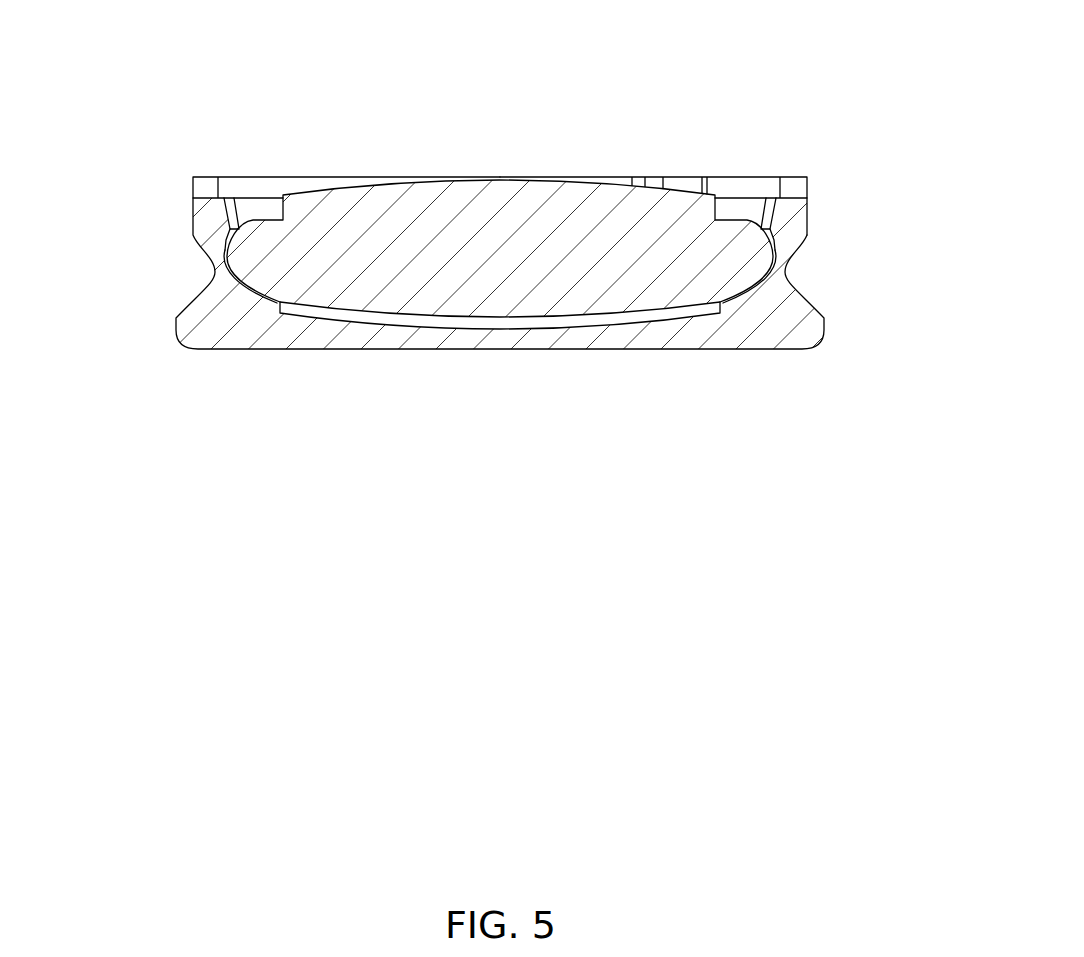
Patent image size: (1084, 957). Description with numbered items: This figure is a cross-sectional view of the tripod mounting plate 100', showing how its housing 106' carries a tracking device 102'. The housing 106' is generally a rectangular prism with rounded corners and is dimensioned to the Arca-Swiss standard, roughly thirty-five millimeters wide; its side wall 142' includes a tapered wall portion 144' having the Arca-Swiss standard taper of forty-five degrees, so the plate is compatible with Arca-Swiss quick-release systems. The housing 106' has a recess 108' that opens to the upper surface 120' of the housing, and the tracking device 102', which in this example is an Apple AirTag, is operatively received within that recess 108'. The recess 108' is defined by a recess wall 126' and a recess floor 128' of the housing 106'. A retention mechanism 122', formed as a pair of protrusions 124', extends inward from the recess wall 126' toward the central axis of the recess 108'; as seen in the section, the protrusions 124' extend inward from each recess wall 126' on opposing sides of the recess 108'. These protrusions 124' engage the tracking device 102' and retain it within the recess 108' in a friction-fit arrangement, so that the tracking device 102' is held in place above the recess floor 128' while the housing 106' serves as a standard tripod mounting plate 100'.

The tripod mounting plate 100' is at (507, 214).
The tracking device 102' is at (507, 225).
The housing 106' is at (715, 144).
The recess 108' is at (500, 146).
The upper surface 120' is at (286, 144).
The retention mechanism 122' is at (501, 223).
The protrusions 124' is at (501, 289).
The recess wall 126' is at (518, 159).
The recess floor 128' is at (500, 365).
The side wall 142' is at (868, 189).
The tapered wall portion 144' is at (507, 260).